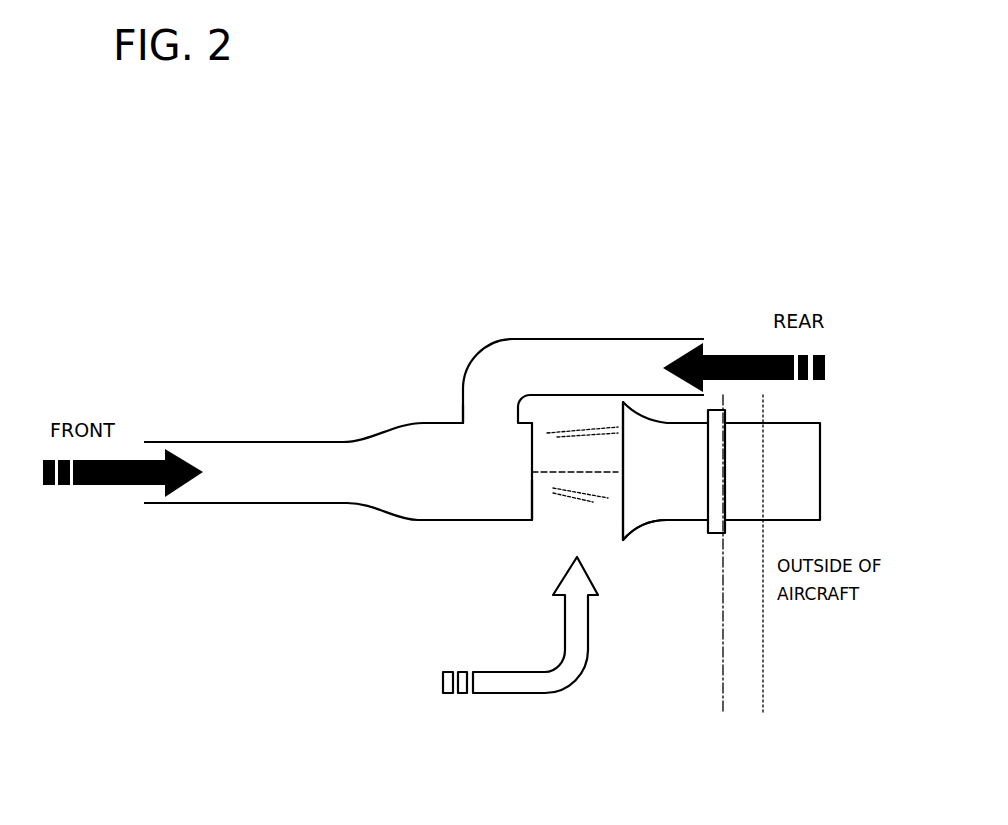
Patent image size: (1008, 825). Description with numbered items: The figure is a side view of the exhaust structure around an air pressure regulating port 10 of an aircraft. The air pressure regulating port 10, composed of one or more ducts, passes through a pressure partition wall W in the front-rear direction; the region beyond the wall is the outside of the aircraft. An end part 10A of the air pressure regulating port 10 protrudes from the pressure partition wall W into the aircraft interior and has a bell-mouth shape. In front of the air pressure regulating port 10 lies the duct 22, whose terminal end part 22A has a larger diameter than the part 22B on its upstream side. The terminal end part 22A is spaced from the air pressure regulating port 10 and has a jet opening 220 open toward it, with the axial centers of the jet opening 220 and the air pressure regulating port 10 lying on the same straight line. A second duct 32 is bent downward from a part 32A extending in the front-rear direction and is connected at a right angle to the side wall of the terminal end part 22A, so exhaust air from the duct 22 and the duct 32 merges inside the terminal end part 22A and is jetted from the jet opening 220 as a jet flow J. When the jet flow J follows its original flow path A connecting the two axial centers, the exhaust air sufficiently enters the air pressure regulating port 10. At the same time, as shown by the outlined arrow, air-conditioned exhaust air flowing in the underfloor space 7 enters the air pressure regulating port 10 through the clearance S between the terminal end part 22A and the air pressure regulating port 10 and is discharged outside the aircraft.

The underfloor space 7 is at (263, 558).
The duct 22 is at (292, 441).
The terminal end part 22A is at (425, 420).
The part on the upstream side 22B is at (191, 441).
The duct 32 is at (508, 338).
The part extending in the front-rear direction 32A is at (560, 337).
The jet opening 220 is at (545, 507).
The air pressure regulating port 10 is at (808, 420).
The end part 10A is at (630, 540).
The jet flow J is at (583, 428).
The original flow path A is at (575, 461).
The clearance S is at (606, 527).
The pressure partition wall W is at (763, 638).